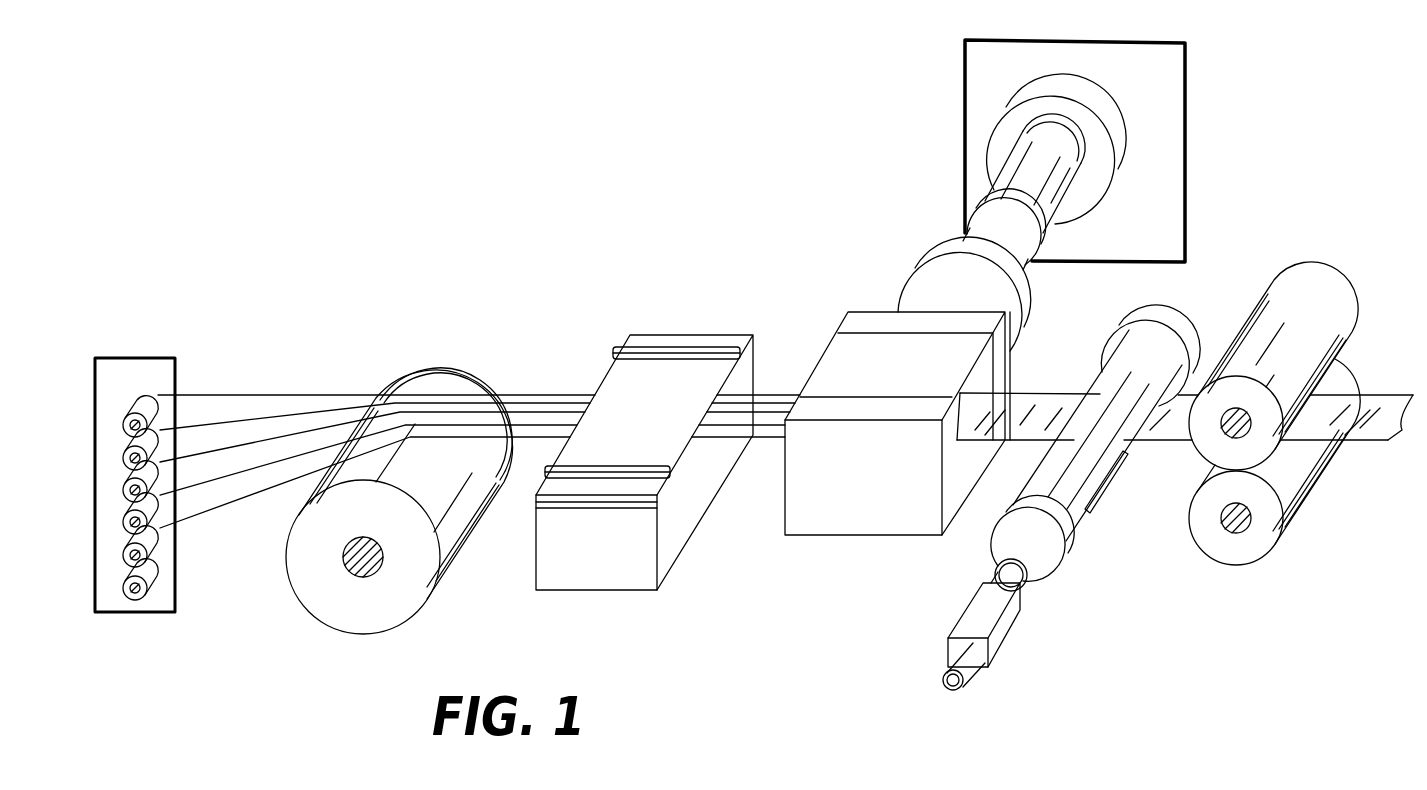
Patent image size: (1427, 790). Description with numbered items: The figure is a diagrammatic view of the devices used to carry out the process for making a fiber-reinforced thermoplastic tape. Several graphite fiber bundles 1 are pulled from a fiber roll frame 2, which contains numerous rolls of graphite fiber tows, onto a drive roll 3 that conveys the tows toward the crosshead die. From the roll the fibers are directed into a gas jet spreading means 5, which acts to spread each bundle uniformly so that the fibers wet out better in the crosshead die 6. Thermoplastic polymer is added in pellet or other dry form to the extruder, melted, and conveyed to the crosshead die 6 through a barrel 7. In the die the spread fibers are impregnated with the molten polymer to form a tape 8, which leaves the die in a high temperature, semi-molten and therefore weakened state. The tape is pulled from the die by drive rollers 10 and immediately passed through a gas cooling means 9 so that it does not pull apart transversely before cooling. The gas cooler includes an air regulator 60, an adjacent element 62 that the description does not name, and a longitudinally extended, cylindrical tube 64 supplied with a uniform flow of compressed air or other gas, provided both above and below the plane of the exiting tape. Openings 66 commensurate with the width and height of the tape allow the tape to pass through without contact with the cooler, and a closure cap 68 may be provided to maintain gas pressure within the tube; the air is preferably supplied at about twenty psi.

The graphite fiber bundles 1 is at (127, 453).
The fiber roll frame 2 is at (108, 598).
The drive roll 3 is at (323, 607).
The gas spreading means 5 is at (580, 568).
The crosshead die 6 is at (847, 523).
The barrel 7 is at (968, 253).
The tape 8 is at (1032, 403).
The gas cooling means 9 is at (1045, 572).
The drive rollers 10 is at (1290, 470).
The air regulator 60 is at (1002, 635).
The nozzle tube 62 is at (967, 680).
The tube 64 is at (1082, 537).
The openings 66 is at (1107, 483).
The closure cap 68 is at (1190, 330).